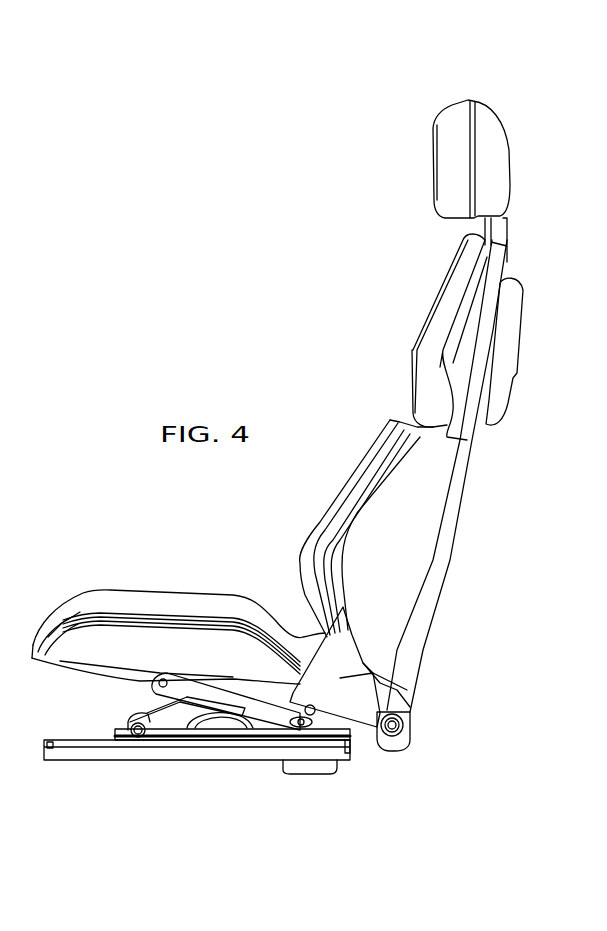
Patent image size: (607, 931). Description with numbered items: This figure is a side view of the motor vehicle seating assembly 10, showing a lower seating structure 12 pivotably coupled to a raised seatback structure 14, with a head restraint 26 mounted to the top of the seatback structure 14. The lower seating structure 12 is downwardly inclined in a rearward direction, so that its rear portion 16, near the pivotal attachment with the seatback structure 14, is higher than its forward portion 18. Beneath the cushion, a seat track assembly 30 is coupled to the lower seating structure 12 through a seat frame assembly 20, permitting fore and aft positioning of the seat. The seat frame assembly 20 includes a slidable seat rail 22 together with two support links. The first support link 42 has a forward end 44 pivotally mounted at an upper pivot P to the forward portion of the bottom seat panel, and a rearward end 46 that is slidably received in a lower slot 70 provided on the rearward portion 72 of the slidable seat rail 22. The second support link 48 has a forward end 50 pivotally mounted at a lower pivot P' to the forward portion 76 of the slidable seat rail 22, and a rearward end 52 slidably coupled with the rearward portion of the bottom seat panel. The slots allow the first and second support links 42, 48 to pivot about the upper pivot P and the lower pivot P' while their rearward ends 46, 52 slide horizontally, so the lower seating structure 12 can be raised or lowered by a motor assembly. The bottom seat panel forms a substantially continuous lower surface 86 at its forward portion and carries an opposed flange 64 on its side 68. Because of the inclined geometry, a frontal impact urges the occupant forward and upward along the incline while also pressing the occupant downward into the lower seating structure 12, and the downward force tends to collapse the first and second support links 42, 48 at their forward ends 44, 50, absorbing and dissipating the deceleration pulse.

The motor vehicle seating assembly 10 is at (530, 194).
The lower seating structure 12 is at (183, 593).
The raised seatback structure 14 is at (417, 537).
The rear portion 16 is at (272, 612).
The forward portion 18 is at (83, 613).
The seat frame assembly 20 is at (258, 757).
The slidable seat rail 22 is at (290, 745).
The head restraint 26 is at (447, 160).
The seat track assembly 30 is at (98, 755).
The first support link 42 is at (243, 707).
The forward end 44 is at (175, 685).
The rearward end 46 is at (360, 680).
The second support link 48 is at (175, 712).
The forward end 50 is at (160, 720).
The rearward end 52 is at (417, 700).
The flange 64 is at (107, 643).
The side 68 is at (137, 605).
The lower slot 70 is at (400, 750).
The rearward portion 72 is at (320, 740).
The forward portion 76 is at (135, 720).
The lower surface 86 is at (67, 670).
The upper pivot P is at (195, 610).
The lower pivot P' is at (116, 777).